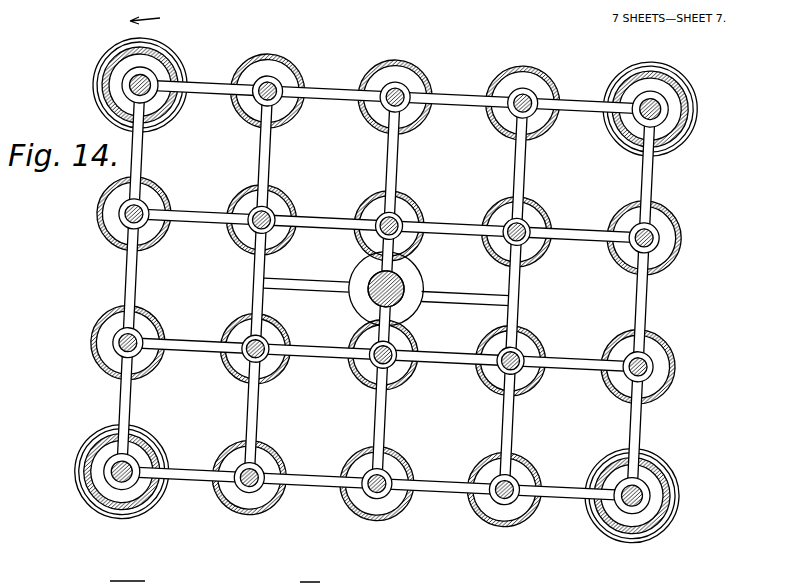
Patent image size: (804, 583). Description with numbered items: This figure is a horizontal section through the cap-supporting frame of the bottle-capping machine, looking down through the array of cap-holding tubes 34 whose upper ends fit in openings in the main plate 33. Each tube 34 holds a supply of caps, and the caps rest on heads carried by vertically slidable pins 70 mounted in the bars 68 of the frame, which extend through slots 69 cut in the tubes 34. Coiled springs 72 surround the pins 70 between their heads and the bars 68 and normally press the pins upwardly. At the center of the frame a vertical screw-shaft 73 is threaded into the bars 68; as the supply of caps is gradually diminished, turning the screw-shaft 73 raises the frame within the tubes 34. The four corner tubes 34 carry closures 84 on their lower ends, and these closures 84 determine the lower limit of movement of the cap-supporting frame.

The main plate 33 is at (196, 582).
The tubes 34 is at (490, 132).
The bars 68 is at (645, 176).
The slots 69 is at (350, 220).
The pins 70 is at (147, 228).
The coiled springs 72 is at (530, 246).
The screw-shaft 73 is at (387, 290).
The closures 84 is at (688, 88).